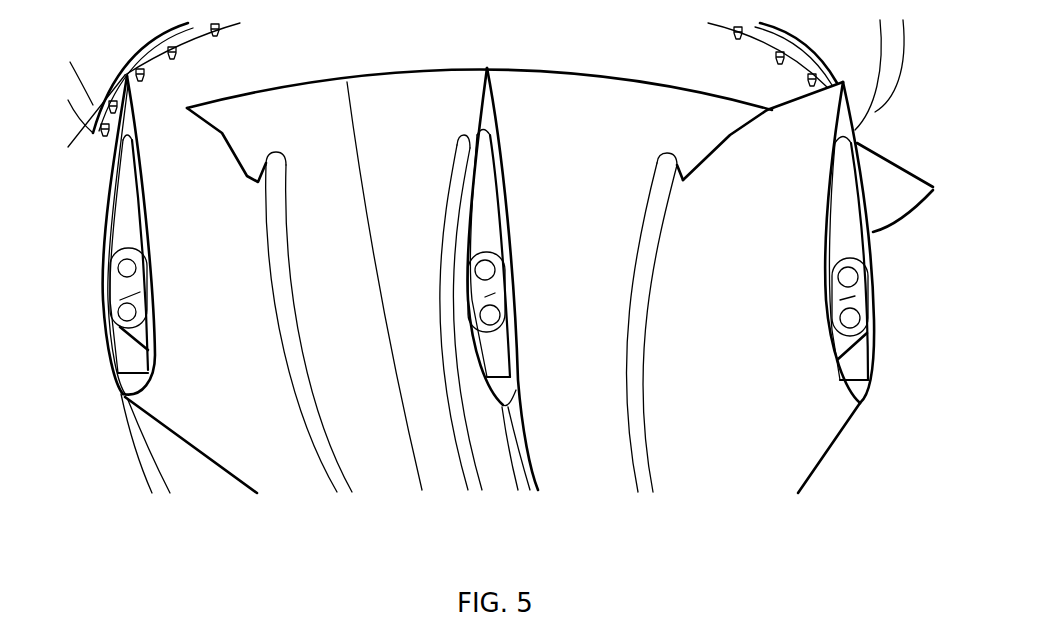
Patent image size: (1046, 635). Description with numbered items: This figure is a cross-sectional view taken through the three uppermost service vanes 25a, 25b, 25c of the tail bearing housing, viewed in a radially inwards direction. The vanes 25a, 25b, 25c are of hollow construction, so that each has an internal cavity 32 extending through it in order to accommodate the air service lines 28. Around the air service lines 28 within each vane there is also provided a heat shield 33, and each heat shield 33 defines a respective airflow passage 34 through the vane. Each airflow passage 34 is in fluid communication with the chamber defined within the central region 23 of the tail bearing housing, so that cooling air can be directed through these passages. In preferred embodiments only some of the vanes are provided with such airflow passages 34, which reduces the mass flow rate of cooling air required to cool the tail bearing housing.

The central region 23 is at (298, 102).
The service vane 25a is at (852, 133).
The service vane 25b is at (482, 108).
The service vane 25c is at (125, 118).
The air service lines 28 is at (122, 270).
The internal cavity 32 is at (122, 187).
The heat shield 33 is at (137, 280).
The airflow passage 34 is at (132, 290).